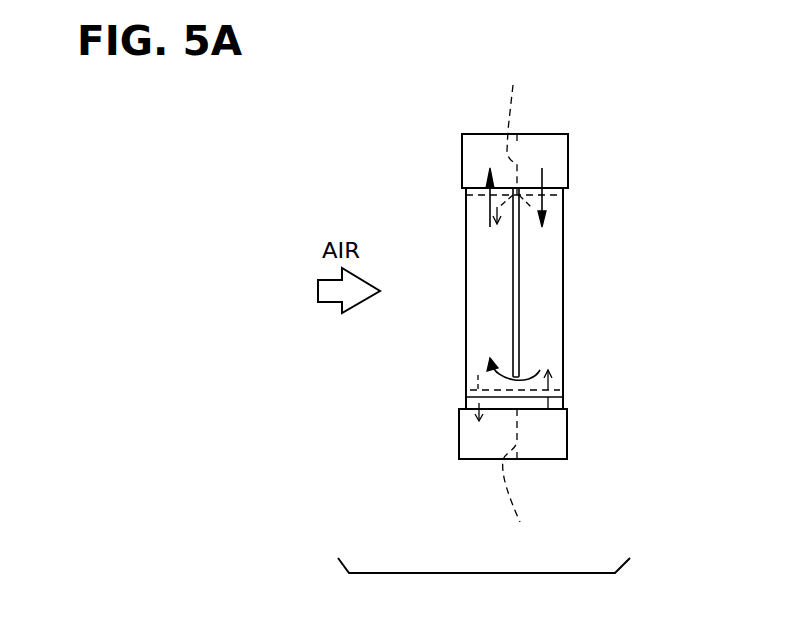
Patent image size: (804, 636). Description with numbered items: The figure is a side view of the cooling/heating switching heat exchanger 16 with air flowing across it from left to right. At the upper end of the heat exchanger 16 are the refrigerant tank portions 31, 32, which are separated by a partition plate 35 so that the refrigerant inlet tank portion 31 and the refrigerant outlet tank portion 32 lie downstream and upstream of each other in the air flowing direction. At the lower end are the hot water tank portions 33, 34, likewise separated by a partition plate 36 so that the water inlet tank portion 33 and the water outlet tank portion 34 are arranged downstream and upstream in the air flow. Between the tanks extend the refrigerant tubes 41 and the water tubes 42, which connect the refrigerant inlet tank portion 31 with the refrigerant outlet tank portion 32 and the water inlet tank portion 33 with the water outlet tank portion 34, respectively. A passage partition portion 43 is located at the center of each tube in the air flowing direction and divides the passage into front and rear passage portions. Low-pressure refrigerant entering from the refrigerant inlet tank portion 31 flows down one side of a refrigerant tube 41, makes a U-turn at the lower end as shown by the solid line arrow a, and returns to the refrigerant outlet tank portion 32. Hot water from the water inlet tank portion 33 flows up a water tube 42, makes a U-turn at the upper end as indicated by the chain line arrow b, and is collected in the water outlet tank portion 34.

The cooling/heating switching heat exchanger 16 is at (543, 301).
The refrigerant inlet tank portion 31 is at (541, 148).
The refrigerant outlet tank portion 32 is at (483, 148).
The water inlet tank portion 33 is at (545, 448).
The water outlet tank portion 34 is at (483, 448).
The partition plate 35 is at (514, 132).
The partition plate 36 is at (520, 478).
The refrigerant tube 41 is at (575, 298).
The water tube 42 is at (545, 313).
The passage partition portion 43 is at (513, 322).
The solid line arrow a is at (530, 378).
The chain line arrow b is at (532, 213).